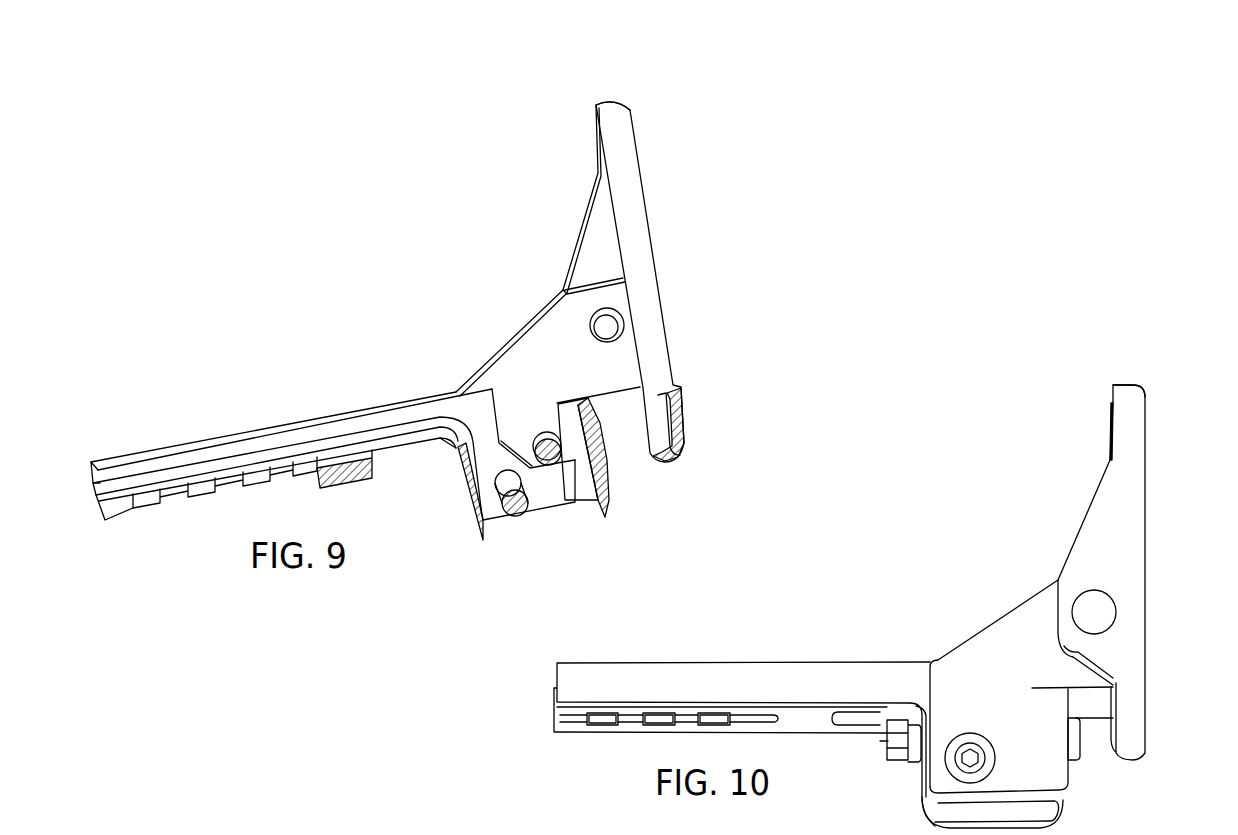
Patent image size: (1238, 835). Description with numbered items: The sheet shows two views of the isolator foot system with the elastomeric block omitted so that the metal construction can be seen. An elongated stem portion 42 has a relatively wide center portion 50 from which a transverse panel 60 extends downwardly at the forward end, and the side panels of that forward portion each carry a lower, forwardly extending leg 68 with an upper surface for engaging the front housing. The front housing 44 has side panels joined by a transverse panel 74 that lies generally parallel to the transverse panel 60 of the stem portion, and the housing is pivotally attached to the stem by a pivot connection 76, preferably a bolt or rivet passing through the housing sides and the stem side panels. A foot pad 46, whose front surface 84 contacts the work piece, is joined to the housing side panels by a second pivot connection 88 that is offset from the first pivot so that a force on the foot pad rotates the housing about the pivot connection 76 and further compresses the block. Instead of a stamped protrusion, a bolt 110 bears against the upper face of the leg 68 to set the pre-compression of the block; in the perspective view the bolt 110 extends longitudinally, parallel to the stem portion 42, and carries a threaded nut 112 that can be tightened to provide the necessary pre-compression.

In FIG. 9, the stem portion 42 is at (229, 432).
In FIG. 10, the stem portion 42 is at (695, 661).
In FIG. 9, the front housing 44 is at (505, 348).
In FIG. 10, the front housing 44 is at (973, 633).
In FIG. 9, the foot pad 46 is at (628, 108).
In FIG. 10, the foot pad 46 is at (1147, 393).
In FIG. 10, the center portion 50 is at (802, 722).
In FIG. 9, the transverse panel 60 is at (470, 505).
In FIG. 10, the transverse panel 60 is at (924, 772).
In FIG. 9, the leg 68 is at (562, 500).
In FIG. 9, the transverse panel 74 is at (613, 487).
In FIG. 10, the transverse panel 74 is at (1068, 800).
In FIG. 9, the pivot connection 76 is at (513, 515).
In FIG. 10, the pivot connection 76 is at (980, 756).
In FIG. 9, the front surface 84 is at (652, 250).
In FIG. 10, the front surface 84 is at (1147, 540).
In FIG. 9, the pivot connection 88 is at (590, 320).
In FIG. 10, the pivot connection 88 is at (1095, 612).
In FIG. 9, the bolt 110 is at (547, 466).
In FIG. 10, the bolt 110 is at (1073, 738).
In FIG. 10, the threaded nut 112 is at (882, 740).